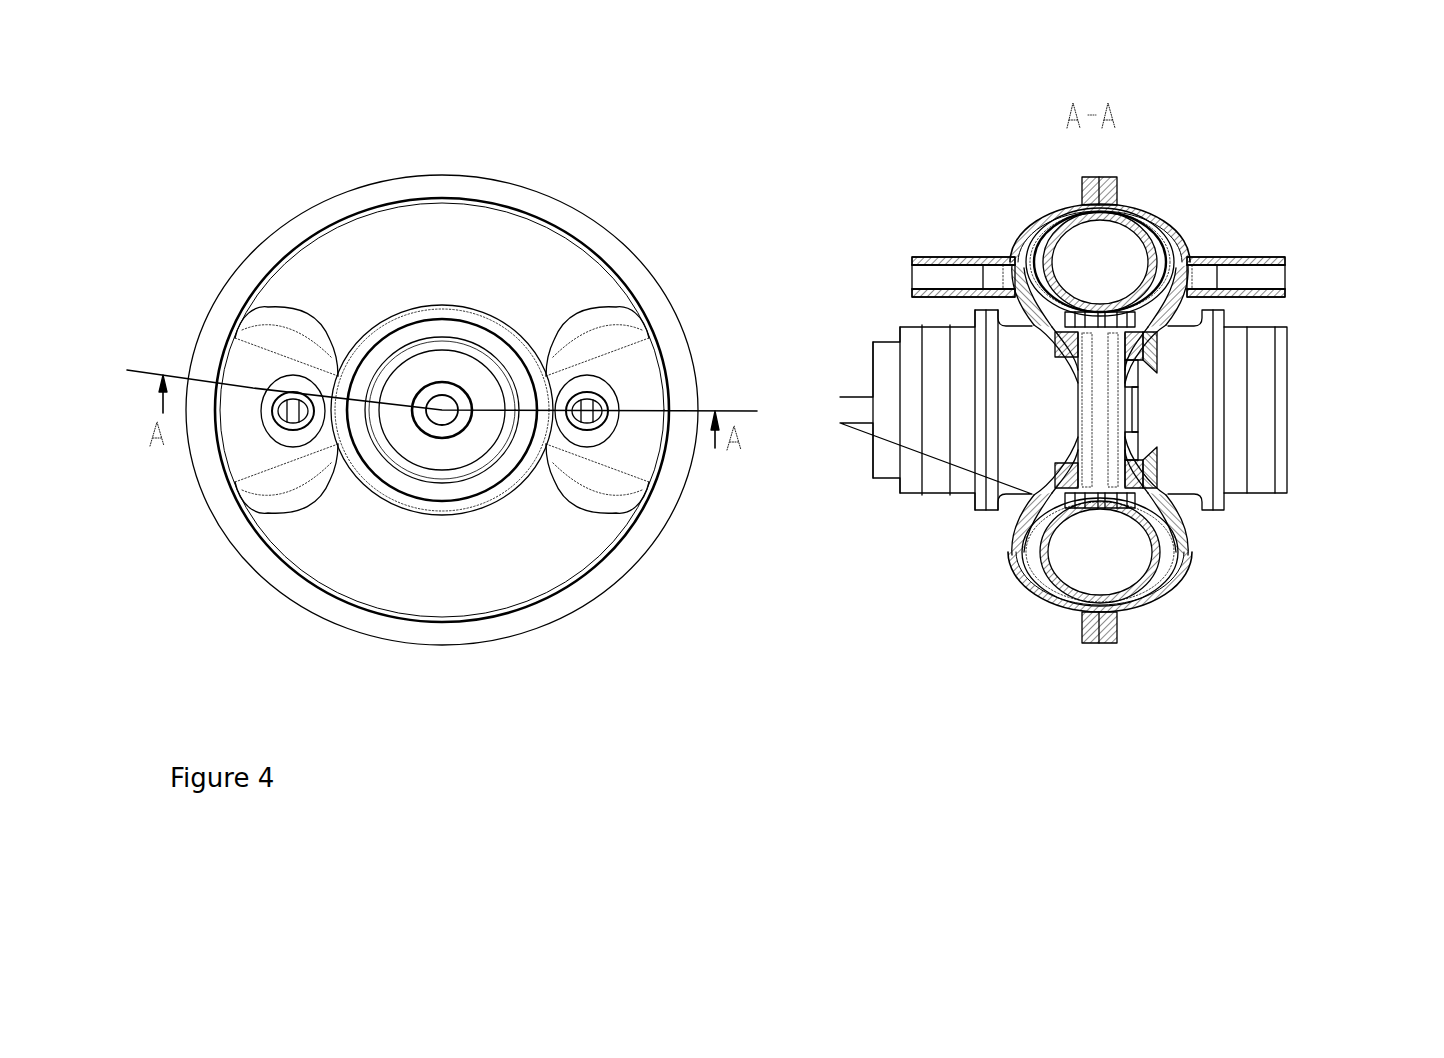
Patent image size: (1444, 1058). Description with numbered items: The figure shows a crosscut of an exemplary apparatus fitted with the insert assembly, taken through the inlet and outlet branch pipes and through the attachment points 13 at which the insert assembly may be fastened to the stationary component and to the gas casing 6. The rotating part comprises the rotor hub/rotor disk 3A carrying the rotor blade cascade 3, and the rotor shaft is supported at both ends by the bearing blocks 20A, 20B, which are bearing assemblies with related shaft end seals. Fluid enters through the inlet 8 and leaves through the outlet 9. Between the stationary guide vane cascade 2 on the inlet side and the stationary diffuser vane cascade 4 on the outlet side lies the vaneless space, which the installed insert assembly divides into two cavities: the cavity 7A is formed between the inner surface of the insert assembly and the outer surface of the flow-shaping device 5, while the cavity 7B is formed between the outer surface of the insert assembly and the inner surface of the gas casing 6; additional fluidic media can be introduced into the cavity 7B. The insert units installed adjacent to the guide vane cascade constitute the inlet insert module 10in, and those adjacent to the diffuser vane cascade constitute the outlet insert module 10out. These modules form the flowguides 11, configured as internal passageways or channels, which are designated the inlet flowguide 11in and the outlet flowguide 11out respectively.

The stationary guide vane cascade 2 is at (1078, 498).
The rotor blade cascade 3 is at (1087, 505).
The rotor hub/rotor disk 3A is at (1103, 393).
The stationary diffuser vane cascade 4 is at (1182, 528).
The flow-shaping device 5 is at (1122, 222).
The gas casing 6 is at (1047, 213).
The cavity formed between the insert assembly and the flow-shaping device 7A is at (1033, 242).
The cavity formed between the insert assembly and the gas casing 7B is at (1020, 252).
The inlet 8 is at (910, 277).
The outlet 9 is at (1278, 277).
The inlet insert module 10in is at (1015, 243).
The outlet insert module 10out is at (1165, 242).
The flowguide 11 is at (1098, 277).
The inlet flowguide 11in is at (1013, 283).
The outlet flowguide 11out is at (1177, 288).
The attachment points 13 is at (1112, 628).
The bearing block 20A is at (960, 418).
The bearing block 20B is at (1233, 418).